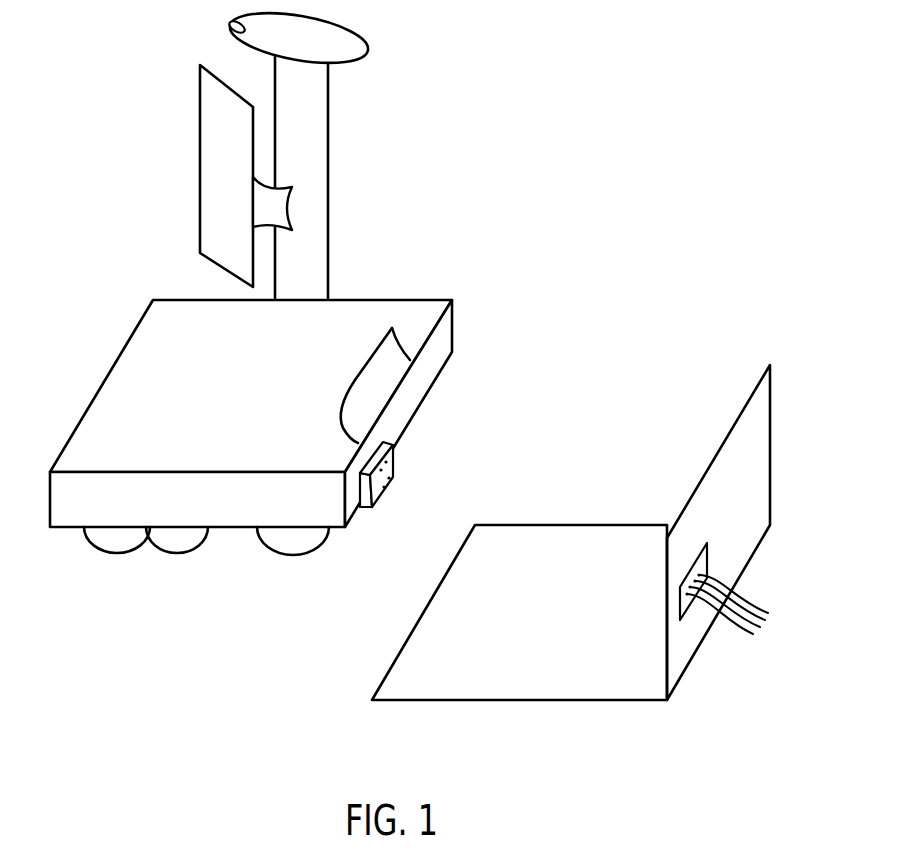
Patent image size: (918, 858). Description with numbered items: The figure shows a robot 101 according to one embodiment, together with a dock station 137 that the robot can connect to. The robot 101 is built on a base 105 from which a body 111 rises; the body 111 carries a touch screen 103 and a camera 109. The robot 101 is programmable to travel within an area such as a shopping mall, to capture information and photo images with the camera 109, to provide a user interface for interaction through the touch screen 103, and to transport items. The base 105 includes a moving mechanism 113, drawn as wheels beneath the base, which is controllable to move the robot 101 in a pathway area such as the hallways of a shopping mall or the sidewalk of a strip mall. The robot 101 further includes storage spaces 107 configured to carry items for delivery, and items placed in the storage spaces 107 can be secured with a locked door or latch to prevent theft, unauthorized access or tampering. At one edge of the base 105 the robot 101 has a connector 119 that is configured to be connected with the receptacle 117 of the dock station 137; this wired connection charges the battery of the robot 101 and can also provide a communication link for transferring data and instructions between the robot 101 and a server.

The robot 101 is at (353, 32).
The camera 109 is at (233, 32).
The touch screen 103 is at (218, 122).
The body 111 is at (328, 197).
The base 105 is at (450, 328).
The storage spaces 107 is at (380, 377).
The connector 119 is at (397, 460).
The moving mechanism 113 is at (313, 553).
The dock station 137 is at (747, 398).
The receptacle 117 is at (703, 557).